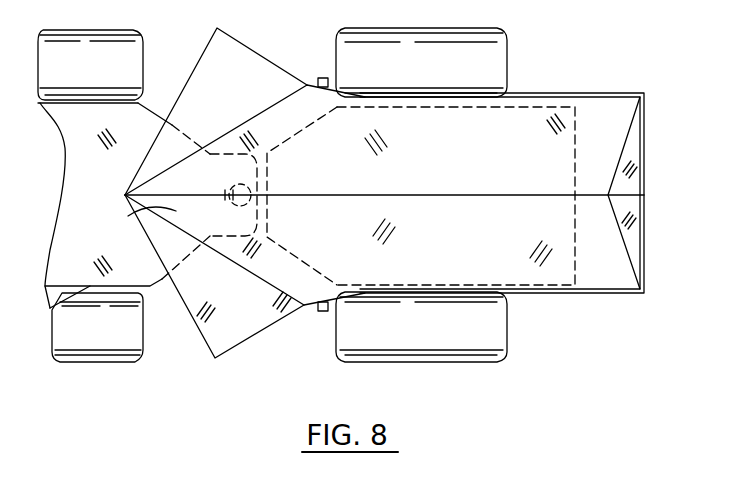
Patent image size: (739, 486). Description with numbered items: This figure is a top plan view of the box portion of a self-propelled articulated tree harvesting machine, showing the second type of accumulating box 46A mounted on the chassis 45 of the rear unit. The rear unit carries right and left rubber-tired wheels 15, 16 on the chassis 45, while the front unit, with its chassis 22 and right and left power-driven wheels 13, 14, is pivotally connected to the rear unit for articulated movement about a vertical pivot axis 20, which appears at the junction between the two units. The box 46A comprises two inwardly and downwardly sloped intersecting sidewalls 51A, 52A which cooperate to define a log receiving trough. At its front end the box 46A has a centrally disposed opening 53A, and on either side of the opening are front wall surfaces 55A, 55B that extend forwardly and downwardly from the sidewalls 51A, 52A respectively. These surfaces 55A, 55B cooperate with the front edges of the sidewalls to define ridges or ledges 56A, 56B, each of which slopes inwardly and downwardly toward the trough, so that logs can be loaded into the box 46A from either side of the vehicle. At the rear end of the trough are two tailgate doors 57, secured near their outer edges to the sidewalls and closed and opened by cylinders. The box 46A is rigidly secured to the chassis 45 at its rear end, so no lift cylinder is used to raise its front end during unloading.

The right power-driven wheel 13 is at (109, 350).
The left power-driven wheel 14 is at (97, 42).
The right rear wheel 15 is at (500, 327).
The left rear wheel 16 is at (483, 43).
The vertical pivot axis 20 is at (232, 185).
The chassis 22 is at (161, 279).
The chassis 45 is at (570, 287).
The accumulating box 46A is at (565, 93).
The sidewall 51A is at (509, 160).
The sidewall 52A is at (509, 241).
The centrally disposed opening 53A is at (133, 212).
The front wall surface 55A is at (248, 85).
The front wall surface 55B is at (258, 304).
The ridge 56A is at (256, 120).
The ridge 56B is at (258, 276).
The tailgate doors 57 is at (644, 212).